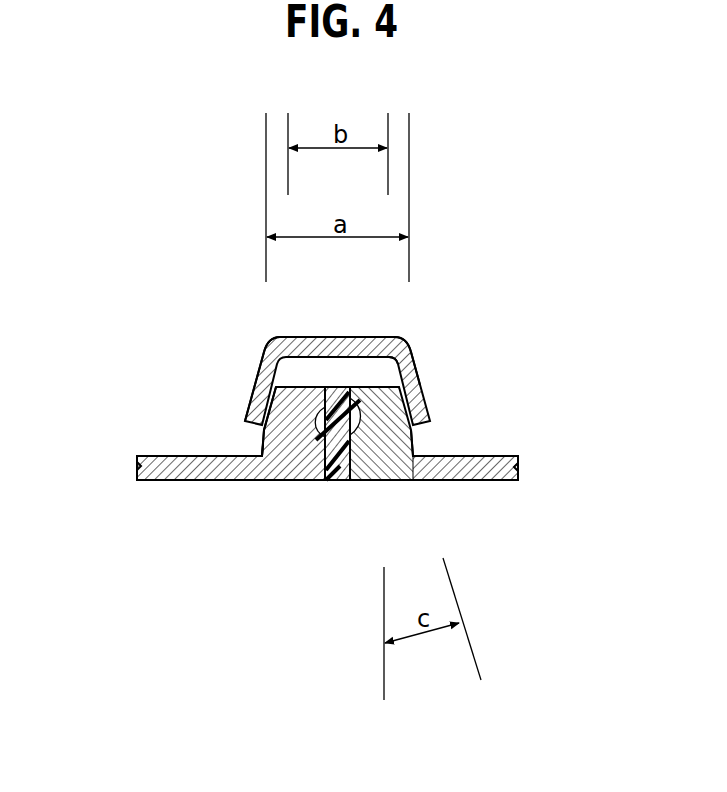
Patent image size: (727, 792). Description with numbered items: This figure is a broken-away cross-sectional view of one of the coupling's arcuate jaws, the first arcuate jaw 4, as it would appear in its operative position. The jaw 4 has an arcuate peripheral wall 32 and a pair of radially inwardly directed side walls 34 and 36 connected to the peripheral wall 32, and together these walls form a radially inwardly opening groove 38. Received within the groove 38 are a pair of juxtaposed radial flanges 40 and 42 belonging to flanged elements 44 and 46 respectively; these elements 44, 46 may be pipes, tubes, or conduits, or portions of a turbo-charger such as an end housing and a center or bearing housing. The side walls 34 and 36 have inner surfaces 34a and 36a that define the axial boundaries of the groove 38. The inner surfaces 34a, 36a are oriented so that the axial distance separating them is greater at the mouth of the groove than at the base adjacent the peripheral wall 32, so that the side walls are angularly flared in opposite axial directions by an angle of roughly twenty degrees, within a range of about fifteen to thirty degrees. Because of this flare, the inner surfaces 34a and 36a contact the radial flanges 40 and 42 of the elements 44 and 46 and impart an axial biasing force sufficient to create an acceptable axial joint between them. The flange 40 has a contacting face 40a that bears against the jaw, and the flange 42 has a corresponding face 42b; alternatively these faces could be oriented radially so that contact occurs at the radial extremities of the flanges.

The first arcuate jaw 4 is at (418, 333).
The arcuate peripheral wall 32 is at (337, 338).
The side wall 34 is at (414, 390).
The inner surface 34a is at (383, 382).
The side wall 36 is at (263, 369).
The inner surface 36a is at (300, 338).
The inwardly opening groove 38 is at (408, 350).
The radial flange 40 is at (415, 434).
The contacting face 40a is at (415, 450).
The radial flange 42 is at (262, 436).
The leg base portion 42b is at (260, 453).
The flanged element 44 is at (493, 470).
The flanged element 46 is at (173, 468).